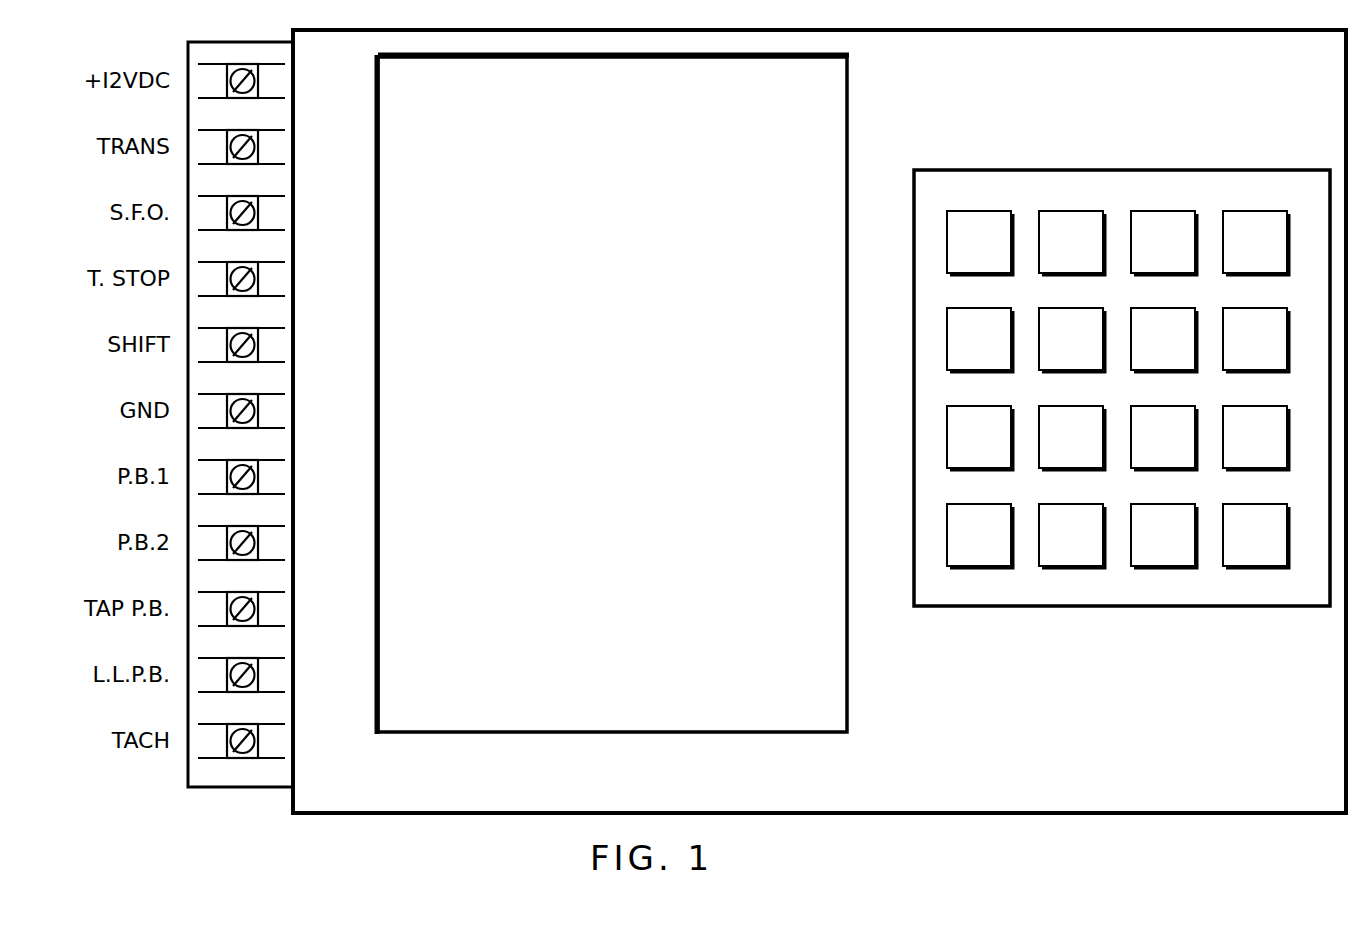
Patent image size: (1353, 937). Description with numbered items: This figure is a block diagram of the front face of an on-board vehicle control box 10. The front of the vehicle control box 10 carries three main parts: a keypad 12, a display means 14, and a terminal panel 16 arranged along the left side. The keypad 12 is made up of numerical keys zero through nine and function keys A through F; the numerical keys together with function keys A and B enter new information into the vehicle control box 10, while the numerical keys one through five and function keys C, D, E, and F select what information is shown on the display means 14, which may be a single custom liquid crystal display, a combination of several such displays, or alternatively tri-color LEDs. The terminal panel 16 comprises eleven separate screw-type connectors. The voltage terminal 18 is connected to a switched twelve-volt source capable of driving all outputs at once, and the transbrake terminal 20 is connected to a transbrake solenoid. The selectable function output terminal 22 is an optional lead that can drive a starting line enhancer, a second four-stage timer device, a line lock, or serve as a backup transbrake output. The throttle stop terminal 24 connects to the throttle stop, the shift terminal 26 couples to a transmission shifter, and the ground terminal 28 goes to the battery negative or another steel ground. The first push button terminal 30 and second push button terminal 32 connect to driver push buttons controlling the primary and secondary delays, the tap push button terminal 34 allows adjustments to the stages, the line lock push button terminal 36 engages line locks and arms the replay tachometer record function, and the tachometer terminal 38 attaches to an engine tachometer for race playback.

The vehicle control box 10 is at (968, 815).
The keypad 12 is at (1090, 608).
The display means 14 is at (601, 736).
The terminal panel 16 is at (213, 789).
The voltage terminal 18 is at (245, 65).
The transbrake terminal 20 is at (245, 131).
The selectable function output (S.F.O.) terminal 22 is at (245, 197).
The throttle stop terminal 24 is at (245, 263).
The shift terminal 26 is at (245, 329).
The ground terminal 28 is at (245, 395).
The Push Button 1 terminal 30 is at (245, 461).
The Push Button 2 terminal 32 is at (245, 527).
The Tap Push Button terminal 34 is at (245, 593).
The Line Lock Push Button terminal 36 is at (245, 659).
The tachometer terminal 38 is at (245, 725).